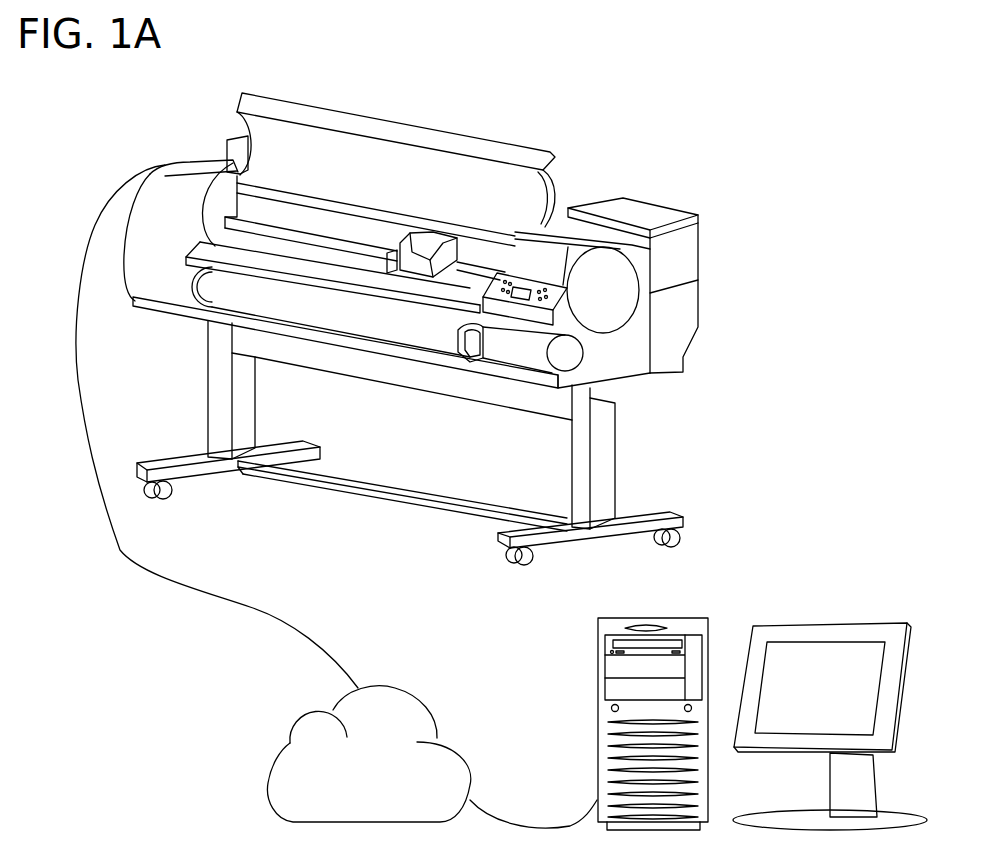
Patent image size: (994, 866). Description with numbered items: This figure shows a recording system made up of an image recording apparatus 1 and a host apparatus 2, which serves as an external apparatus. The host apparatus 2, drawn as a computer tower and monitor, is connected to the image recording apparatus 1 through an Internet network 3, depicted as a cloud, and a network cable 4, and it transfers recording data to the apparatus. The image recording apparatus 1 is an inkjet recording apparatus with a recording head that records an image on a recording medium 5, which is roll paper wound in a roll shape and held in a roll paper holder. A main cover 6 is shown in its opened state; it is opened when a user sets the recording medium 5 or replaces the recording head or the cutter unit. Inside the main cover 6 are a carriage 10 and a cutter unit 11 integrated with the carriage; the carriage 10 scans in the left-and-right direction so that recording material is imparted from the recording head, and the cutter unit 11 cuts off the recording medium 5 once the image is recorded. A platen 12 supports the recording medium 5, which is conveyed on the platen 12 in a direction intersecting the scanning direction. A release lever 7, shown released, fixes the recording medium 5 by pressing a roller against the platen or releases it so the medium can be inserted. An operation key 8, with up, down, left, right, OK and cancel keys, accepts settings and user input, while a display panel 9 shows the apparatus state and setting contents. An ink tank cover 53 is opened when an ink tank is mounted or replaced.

The image recording apparatus 1 is at (238, 138).
The host apparatus 2 is at (733, 612).
The Internet network 3 is at (400, 688).
The network cable 4 is at (78, 280).
The recording medium 5 is at (336, 316).
The main cover 6 is at (413, 123).
The release lever 7 is at (472, 357).
The operation key 8 is at (543, 290).
The display panel 9 is at (508, 280).
The carriage 10 is at (412, 265).
The cutter unit 11 is at (383, 262).
The platen 12 is at (220, 248).
The ink tank cover 53 is at (610, 198).